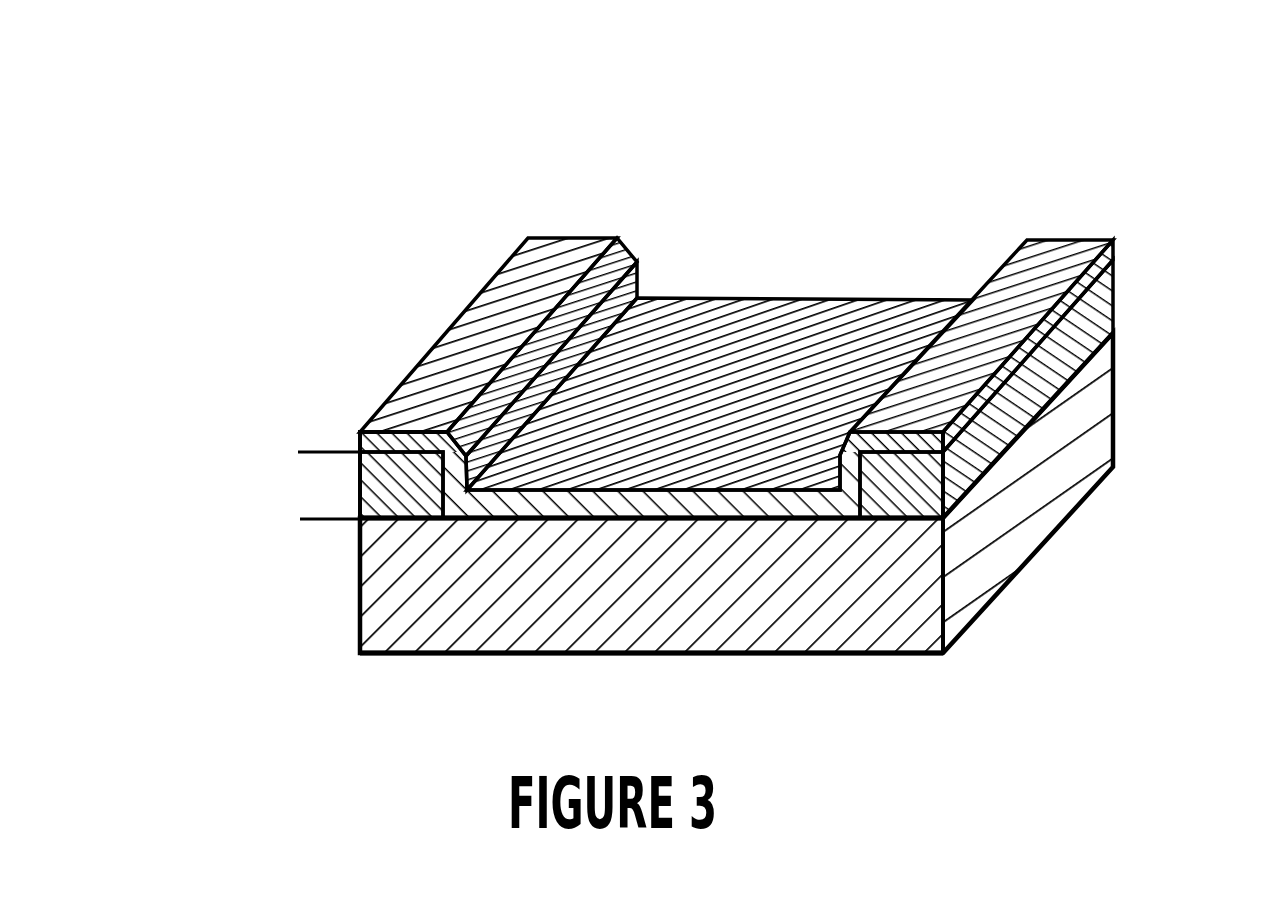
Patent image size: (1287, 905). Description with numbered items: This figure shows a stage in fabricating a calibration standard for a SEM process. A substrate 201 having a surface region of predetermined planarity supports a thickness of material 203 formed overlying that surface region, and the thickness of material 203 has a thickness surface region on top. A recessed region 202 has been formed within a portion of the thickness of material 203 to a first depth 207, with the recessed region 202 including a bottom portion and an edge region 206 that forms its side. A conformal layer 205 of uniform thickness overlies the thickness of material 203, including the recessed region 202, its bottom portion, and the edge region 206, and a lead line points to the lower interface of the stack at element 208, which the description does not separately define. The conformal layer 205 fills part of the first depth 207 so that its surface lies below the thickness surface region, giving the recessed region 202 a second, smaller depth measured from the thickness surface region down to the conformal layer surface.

The substrate 201 is at (1093, 412).
The recessed region 202 is at (724, 383).
The thickness of material 203 is at (734, 473).
The conformal layer 205 is at (1107, 242).
The edge region 206 is at (395, 510).
The first depth 207 is at (311, 452).
The bottom interface / bottom layer 208 is at (748, 520).